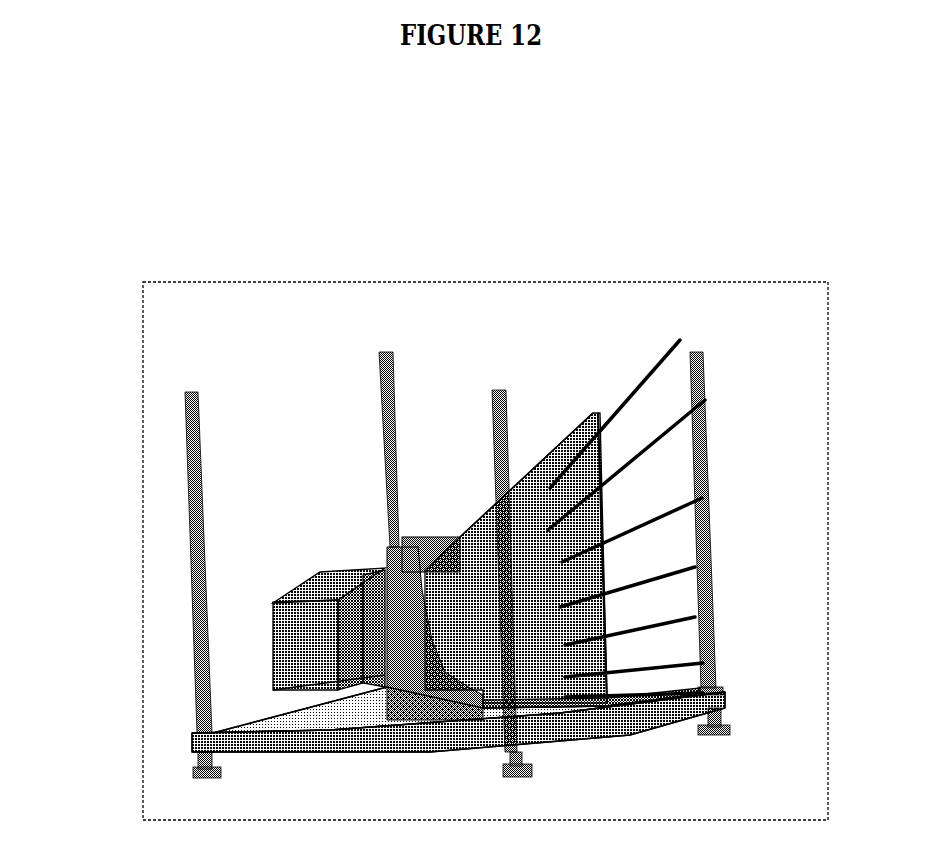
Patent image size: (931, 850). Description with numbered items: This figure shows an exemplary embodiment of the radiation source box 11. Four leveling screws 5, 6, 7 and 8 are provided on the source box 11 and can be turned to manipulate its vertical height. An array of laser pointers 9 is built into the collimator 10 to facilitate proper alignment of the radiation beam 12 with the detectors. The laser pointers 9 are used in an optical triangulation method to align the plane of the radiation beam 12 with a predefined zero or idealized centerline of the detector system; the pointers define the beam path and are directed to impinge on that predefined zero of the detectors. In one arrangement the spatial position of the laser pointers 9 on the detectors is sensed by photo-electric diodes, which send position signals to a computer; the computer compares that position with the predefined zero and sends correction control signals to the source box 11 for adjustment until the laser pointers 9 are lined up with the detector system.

The leveling screw 5 is at (185, 470).
The leveling screw 6 is at (388, 357).
The leveling screw 7 is at (502, 388).
The leveling screw 8 is at (702, 380).
The array of laser pointers 9 is at (642, 462).
The collimator 10 is at (310, 718).
The radiation source box 11 is at (183, 347).
The radiation beam 12 is at (540, 673).